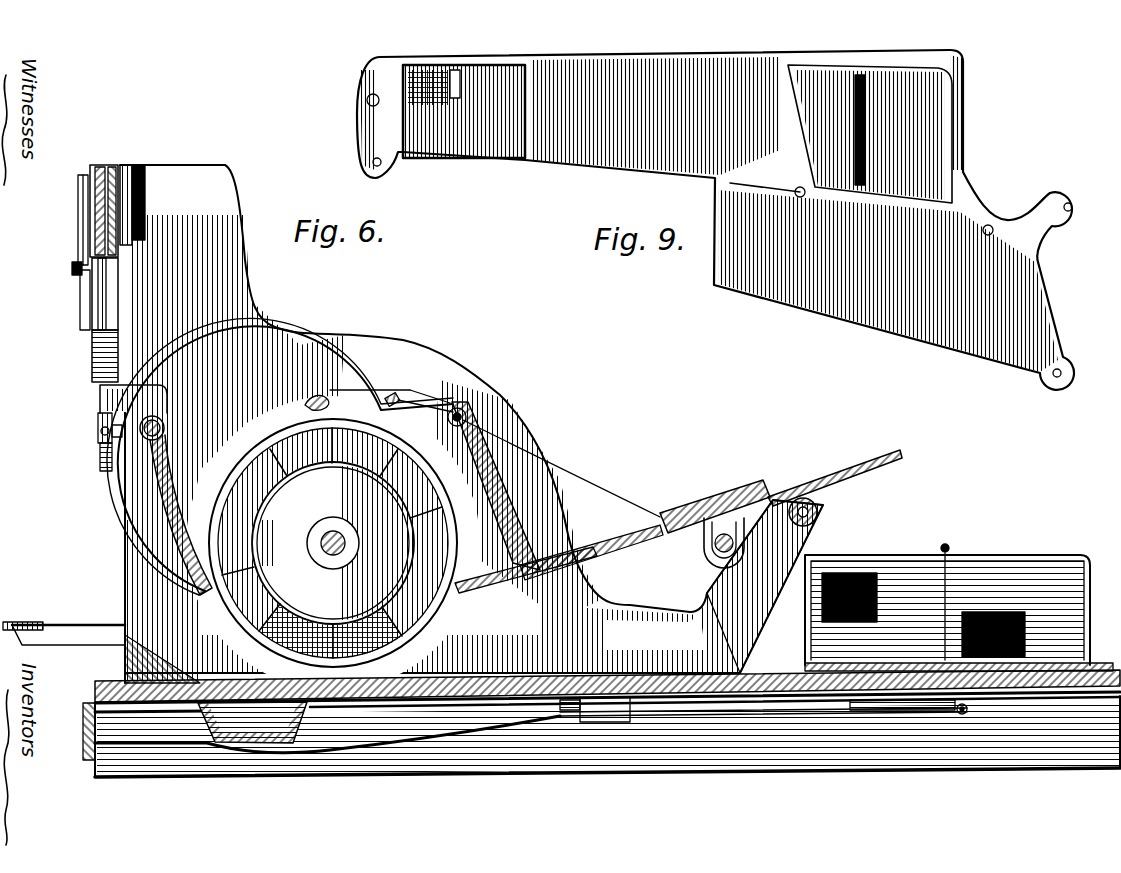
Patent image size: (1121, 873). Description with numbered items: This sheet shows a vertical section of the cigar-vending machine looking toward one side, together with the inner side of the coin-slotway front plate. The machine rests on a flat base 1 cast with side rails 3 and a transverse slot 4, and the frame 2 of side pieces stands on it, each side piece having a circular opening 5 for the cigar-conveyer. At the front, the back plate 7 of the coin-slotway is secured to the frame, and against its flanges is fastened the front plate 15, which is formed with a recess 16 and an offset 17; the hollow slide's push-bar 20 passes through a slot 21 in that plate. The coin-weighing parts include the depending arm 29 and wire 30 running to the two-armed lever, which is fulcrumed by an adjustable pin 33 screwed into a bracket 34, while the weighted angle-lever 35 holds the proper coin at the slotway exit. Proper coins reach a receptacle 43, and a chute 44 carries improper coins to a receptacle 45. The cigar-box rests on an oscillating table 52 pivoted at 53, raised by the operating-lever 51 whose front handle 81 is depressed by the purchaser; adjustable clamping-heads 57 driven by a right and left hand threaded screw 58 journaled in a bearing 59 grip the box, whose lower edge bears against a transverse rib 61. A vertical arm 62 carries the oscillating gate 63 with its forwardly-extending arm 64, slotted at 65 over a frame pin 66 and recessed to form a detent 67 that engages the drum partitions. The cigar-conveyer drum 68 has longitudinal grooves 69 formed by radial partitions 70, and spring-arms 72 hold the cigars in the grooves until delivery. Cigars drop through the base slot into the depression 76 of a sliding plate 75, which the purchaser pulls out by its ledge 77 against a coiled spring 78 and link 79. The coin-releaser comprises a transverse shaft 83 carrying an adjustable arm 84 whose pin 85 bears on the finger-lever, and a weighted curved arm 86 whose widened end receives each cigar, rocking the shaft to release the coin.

In FIG. 6, the base 1 is at (92, 690).
In FIG. 6, the frame 2 is at (270, 345).
In FIG. 6, the side rails 3 is at (763, 732).
In FIG. 6, the transverse slot 4 is at (268, 700).
In FIG. 6, the circular opening 5 is at (410, 645).
In FIG. 6, the plate 7 is at (110, 205).
In FIG. 9, the plate 15 is at (715, 220).
In FIG. 9, the recess 16 is at (490, 148).
In FIG. 9, the offset 17 is at (910, 140).
In FIG. 6, the push-bar 20 is at (80, 272).
In FIG. 9, the slot 21 is at (468, 72).
In FIG. 6, the arm 29 is at (90, 310).
In FIG. 6, the wire 30 is at (82, 328).
In FIG. 6, the adjustable pin 33 is at (73, 265).
In FIG. 6, the bracket 34 is at (85, 240).
In FIG. 6, the angle-lever 35 is at (104, 445).
In FIG. 6, the receptacle 43 is at (959, 613).
In FIG. 6, the chute 44 is at (587, 532).
In FIG. 6, the receptacle 45 is at (923, 602).
In FIG. 6, the operating-lever 51 is at (68, 626).
In FIG. 6, the oscillating table 52 is at (805, 495).
In FIG. 6, the pivot 53 is at (818, 512).
In FIG. 6, the clamping-heads 57 is at (697, 510).
In FIG. 6, the right and left hand threaded screw 58 is at (705, 545).
In FIG. 6, the bearing 59 is at (738, 555).
In FIG. 6, the transverse rib 61 is at (507, 580).
In FIG. 6, the vertical arm 62 is at (496, 486).
In FIG. 6, the oscillating gate 63 is at (539, 462).
In FIG. 6, the forwardly-extending arm 64 is at (390, 408).
In FIG. 6, the slot 65 is at (393, 395).
In FIG. 6, the pin 66 is at (418, 395).
In FIG. 6, the detent 67 is at (318, 397).
In FIG. 6, the cigar-conveyer drum 68 is at (334, 543).
In FIG. 6, the longitudinal grooves 69 is at (468, 568).
In FIG. 6, the radial partitions 70 is at (325, 460).
In FIG. 6, the spring-arms 72 is at (280, 456).
In FIG. 6, the plate 75 is at (430, 705).
In FIG. 6, the depression 76 is at (290, 740).
In FIG. 6, the ledge 77 is at (87, 765).
In FIG. 6, the coiled spring 78 is at (790, 712).
In FIG. 6, the link 79 is at (722, 714).
In FIG. 6, the handle 81 is at (20, 623).
In FIG. 6, the transverse shaft 83 is at (165, 430).
In FIG. 6, the adjustable arm 84 is at (128, 442).
In FIG. 6, the pin 85 is at (100, 432).
In FIG. 6, the curved arm 86 is at (170, 478).